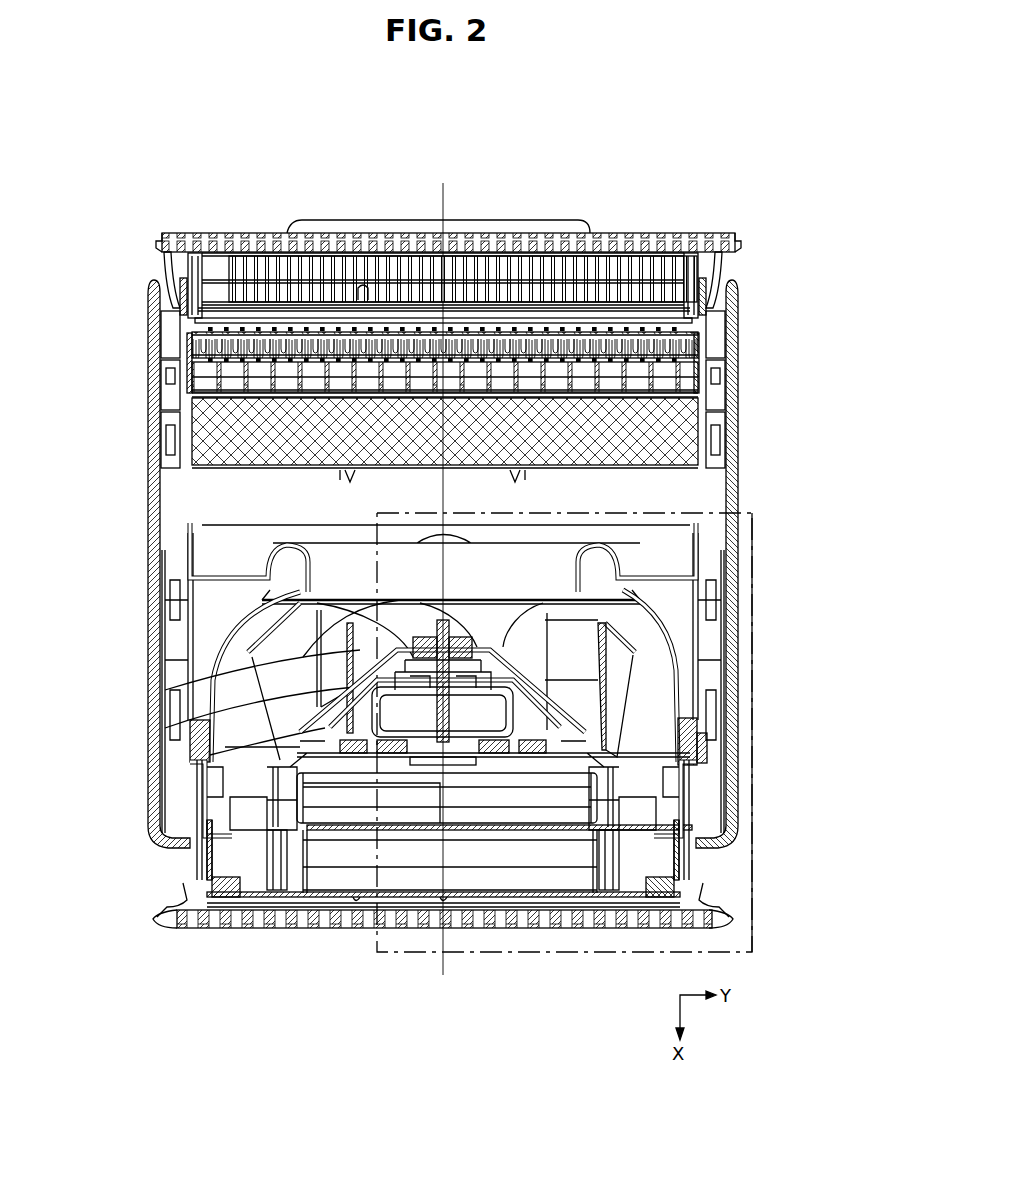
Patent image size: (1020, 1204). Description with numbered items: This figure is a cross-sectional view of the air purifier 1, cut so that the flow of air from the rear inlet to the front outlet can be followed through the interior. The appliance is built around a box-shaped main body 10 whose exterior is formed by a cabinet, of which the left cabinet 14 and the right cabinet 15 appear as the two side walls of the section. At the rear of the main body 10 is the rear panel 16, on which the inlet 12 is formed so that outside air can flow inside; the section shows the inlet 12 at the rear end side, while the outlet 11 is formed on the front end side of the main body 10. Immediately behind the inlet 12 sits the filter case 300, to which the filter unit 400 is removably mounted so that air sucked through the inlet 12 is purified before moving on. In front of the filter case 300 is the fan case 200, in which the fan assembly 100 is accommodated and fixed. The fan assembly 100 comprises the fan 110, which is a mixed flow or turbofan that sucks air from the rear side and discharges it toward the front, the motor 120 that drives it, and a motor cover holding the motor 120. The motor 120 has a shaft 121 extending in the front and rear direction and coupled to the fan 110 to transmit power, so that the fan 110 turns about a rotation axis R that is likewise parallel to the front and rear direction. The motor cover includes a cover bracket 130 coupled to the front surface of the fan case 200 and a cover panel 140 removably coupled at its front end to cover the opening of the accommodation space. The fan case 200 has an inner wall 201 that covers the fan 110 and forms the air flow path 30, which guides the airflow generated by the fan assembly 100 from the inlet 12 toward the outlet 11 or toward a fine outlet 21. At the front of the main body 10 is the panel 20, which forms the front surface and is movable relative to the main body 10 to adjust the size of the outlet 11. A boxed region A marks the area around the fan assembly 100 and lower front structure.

The air purifier 1 is at (152, 144).
The main body 10 is at (128, 520).
The outlet 11 is at (182, 870).
The inlet 12 is at (165, 262).
The left cabinet 14 is at (162, 440).
The right cabinet 15 is at (737, 590).
The rear panel 16 is at (288, 232).
The panel 20 is at (248, 942).
The fine outlet 21 is at (283, 915).
The air flow path 30 is at (227, 850).
The fan assembly 100 is at (480, 842).
The fan 110 is at (633, 640).
The motor 120 is at (290, 715).
The shaft 121 is at (312, 675).
The cover bracket 130 is at (303, 755).
The cover panel 140 is at (335, 826).
The fan case 200 is at (672, 740).
The inner wall 201 is at (675, 660).
The filter case 300 is at (722, 432).
The filter unit 400 is at (205, 405).
The rotation axis R is at (445, 191).
The region A is at (598, 955).